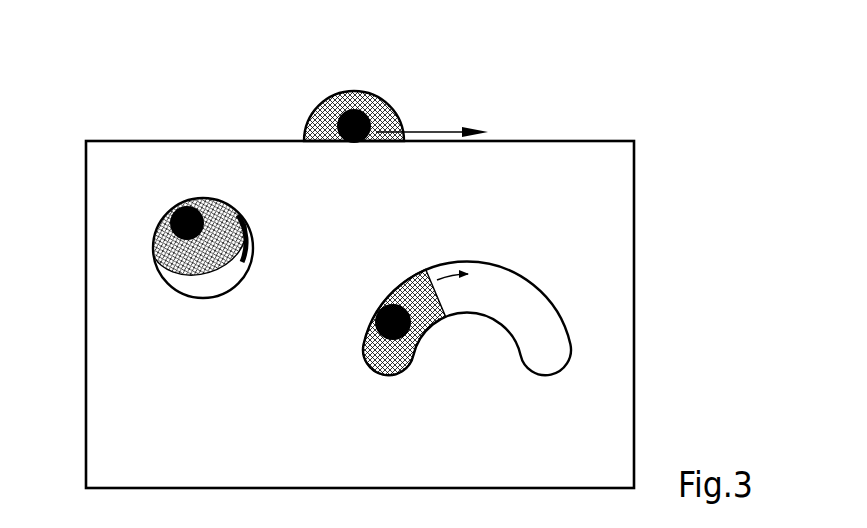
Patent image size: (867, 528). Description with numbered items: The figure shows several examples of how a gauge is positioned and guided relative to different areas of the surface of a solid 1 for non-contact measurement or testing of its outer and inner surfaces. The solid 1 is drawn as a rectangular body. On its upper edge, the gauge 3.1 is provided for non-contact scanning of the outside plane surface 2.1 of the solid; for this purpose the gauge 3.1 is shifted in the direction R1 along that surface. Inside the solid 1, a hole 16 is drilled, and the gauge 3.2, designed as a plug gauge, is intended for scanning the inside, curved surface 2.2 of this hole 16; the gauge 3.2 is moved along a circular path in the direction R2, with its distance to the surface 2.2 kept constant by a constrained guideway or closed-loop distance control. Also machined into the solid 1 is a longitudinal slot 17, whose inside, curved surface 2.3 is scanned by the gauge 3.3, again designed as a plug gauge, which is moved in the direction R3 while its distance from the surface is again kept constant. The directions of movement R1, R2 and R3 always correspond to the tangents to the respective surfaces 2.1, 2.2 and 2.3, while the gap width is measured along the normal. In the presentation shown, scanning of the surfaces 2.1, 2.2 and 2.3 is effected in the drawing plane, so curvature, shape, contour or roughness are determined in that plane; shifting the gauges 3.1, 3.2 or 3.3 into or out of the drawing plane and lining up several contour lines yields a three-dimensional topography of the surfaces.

The solid 1 is at (634, 205).
The outside plane surface 2.1 is at (216, 138).
The gauge 3.1 is at (352, 105).
The direction of movement R1 is at (432, 119).
The inside curved surface 2.2 is at (236, 278).
The gauge 3.2 is at (178, 212).
The direction of movement R2 is at (242, 226).
The hole 16 is at (183, 284).
The inside curved surface 2.3 is at (528, 291).
The gauge 3.3 is at (381, 312).
The direction of movement R3 is at (436, 278).
The longitudinal slot 17 is at (565, 353).